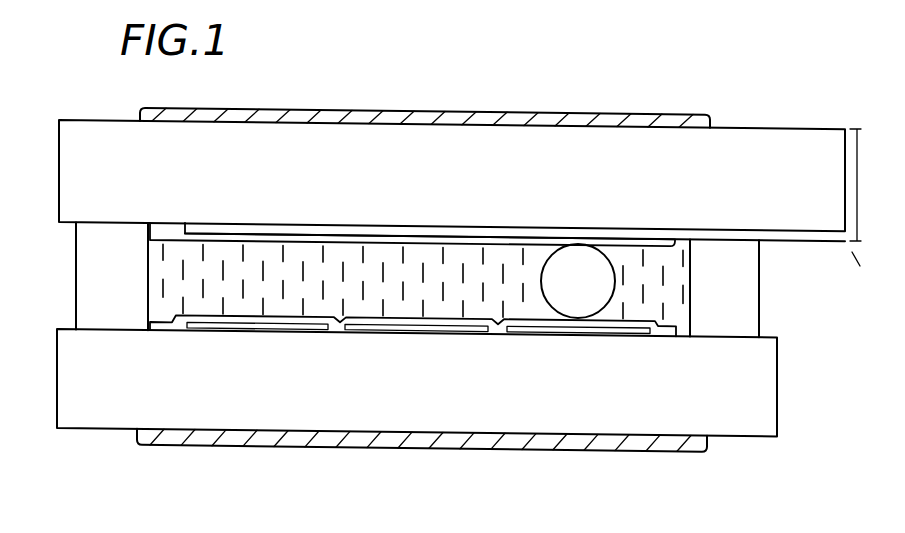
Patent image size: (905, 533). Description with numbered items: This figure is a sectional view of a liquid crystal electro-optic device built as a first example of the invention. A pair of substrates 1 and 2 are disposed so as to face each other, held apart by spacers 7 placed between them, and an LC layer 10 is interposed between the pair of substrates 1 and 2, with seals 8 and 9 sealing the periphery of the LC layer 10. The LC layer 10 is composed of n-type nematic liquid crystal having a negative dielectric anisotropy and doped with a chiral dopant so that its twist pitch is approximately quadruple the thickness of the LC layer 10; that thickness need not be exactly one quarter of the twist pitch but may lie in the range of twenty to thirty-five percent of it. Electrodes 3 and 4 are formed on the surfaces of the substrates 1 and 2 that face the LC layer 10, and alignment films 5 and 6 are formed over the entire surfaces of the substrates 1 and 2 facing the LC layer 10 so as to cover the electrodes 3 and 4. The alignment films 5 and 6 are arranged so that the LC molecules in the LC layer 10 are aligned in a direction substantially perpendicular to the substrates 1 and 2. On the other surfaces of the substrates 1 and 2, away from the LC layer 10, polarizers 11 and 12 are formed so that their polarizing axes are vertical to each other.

The substrate 1 is at (760, 402).
The substrate 2 is at (805, 150).
The electrode 3 is at (648, 330).
The electrode 4 is at (864, 214).
The alignment film 5 is at (150, 326).
The alignment film 6 is at (167, 242).
The spacer 7 is at (578, 303).
The seal 8 is at (94, 280).
The seal 9 is at (738, 274).
The LC layer 10 is at (688, 239).
The polarizer 11 is at (665, 450).
The polarizer 12 is at (436, 120).